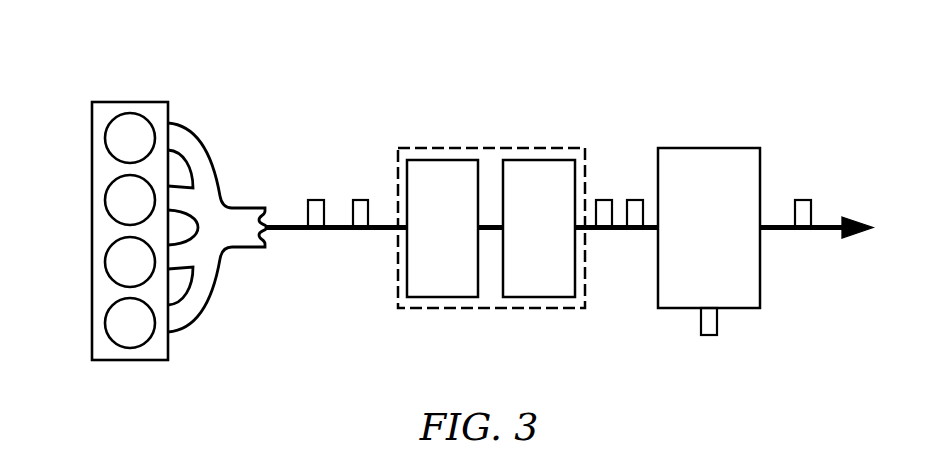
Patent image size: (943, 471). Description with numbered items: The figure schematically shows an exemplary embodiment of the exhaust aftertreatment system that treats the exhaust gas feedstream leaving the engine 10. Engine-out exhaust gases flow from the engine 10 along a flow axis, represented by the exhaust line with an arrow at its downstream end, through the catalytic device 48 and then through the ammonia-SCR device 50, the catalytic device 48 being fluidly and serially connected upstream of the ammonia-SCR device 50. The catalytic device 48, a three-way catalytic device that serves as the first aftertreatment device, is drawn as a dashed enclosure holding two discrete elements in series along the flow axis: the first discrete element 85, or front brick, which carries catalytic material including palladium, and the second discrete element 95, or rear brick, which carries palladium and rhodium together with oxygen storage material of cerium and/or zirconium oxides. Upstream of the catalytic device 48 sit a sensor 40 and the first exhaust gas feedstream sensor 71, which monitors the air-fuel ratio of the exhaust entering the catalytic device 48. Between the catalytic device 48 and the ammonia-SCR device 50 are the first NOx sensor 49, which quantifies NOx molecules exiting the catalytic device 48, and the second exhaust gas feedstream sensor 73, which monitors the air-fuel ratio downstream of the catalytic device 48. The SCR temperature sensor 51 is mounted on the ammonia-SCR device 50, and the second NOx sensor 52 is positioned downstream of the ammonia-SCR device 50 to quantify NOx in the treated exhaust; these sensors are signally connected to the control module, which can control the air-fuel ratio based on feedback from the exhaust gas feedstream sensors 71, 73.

The engine 10 is at (120, 86).
The exhaust gas sensor 40 is at (316, 200).
The first exhaust gas feedstream sensor 71 is at (360, 200).
The catalytic device 48 is at (488, 148).
The first discrete element 85 is at (454, 240).
The second discrete element 95 is at (527, 240).
The first NOx sensor 49 is at (604, 200).
The second exhaust gas feedstream sensor 73 is at (635, 200).
The ammonia-SCR device 50 is at (695, 240).
The SCR temperature sensor 51 is at (709, 335).
The second NOx sensor 52 is at (803, 200).